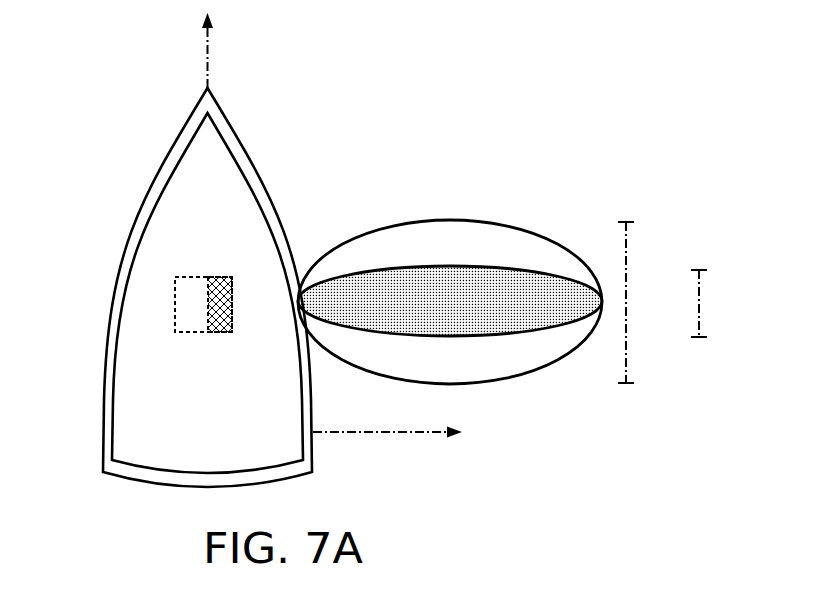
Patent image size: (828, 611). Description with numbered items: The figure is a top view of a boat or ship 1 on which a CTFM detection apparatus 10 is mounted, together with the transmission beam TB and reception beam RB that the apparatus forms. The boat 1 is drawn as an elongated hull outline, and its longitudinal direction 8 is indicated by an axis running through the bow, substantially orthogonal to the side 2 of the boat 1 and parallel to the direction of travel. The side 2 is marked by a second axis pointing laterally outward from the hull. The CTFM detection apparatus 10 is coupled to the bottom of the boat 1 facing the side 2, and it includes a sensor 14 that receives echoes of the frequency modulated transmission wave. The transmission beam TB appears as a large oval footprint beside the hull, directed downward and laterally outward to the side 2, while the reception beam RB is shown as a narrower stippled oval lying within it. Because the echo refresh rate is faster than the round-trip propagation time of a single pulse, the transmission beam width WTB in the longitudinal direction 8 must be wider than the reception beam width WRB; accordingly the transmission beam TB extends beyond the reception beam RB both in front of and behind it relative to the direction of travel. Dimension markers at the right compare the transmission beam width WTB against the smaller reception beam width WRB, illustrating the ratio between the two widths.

The boat or ship 1 is at (107, 353).
The side of the boat 2 is at (413, 432).
The longitudinal direction 8 is at (208, 61).
The CTFM detection apparatus 10 is at (200, 277).
The sensor 14 is at (221, 322).
The transmission beam TB is at (420, 220).
The reception beam RB is at (503, 266).
The transmission beam width WTB is at (628, 300).
The reception beam width WRB is at (701, 304).